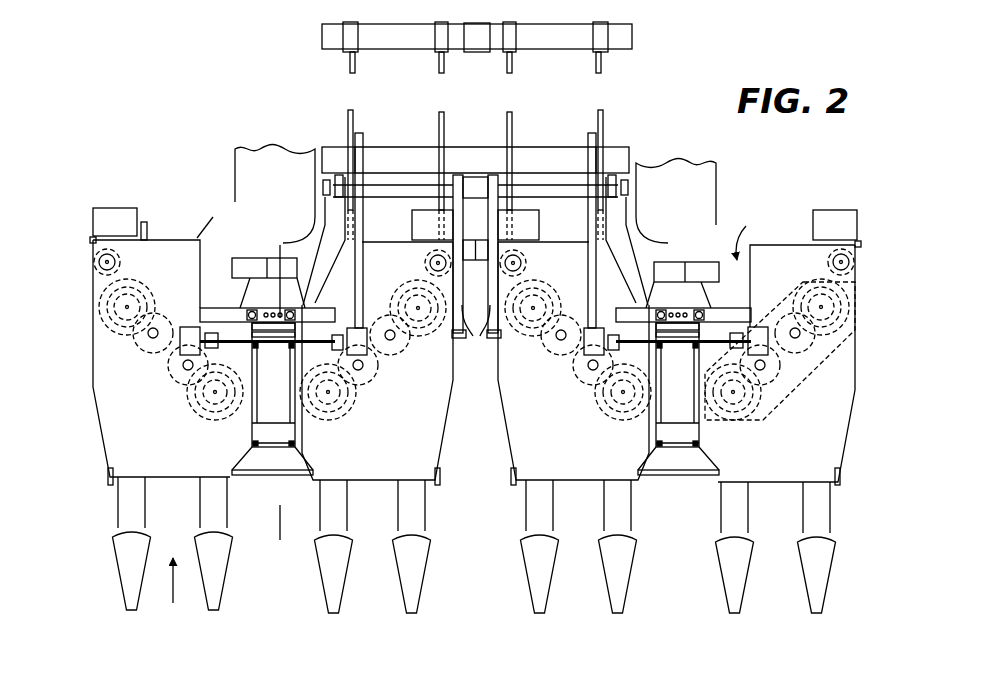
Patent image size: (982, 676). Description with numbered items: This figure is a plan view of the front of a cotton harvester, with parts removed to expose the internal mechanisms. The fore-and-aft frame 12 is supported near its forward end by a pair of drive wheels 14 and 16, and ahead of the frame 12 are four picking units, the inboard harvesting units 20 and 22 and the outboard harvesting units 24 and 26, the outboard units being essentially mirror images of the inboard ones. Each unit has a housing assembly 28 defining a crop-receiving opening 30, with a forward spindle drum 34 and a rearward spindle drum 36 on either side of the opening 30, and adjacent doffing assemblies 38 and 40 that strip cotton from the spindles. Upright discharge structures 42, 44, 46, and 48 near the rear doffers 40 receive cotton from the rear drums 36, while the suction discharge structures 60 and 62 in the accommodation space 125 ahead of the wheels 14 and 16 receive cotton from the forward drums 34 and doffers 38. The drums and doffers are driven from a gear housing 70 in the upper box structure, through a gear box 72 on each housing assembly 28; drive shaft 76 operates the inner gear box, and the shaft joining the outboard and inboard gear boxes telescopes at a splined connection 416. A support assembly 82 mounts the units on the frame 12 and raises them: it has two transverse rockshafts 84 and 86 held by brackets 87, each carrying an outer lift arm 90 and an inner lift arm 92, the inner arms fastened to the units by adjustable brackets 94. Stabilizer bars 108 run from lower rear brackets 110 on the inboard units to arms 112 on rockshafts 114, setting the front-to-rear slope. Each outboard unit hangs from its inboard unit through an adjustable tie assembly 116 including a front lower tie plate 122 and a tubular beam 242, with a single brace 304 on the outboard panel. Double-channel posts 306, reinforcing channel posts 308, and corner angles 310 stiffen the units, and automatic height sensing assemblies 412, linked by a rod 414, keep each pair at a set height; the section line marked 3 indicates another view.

The section line 3- 3 is at (271, 247).
The frame 12 is at (625, 150).
The drive wheel 14 is at (283, 203).
The drive wheel 16 is at (693, 203).
The harvesting unit 20 is at (370, 622).
The harvesting unit 22 is at (572, 622).
The harvesting unit 24 is at (147, 630).
The harvesting unit 26 is at (768, 614).
The housing assembly 28 is at (100, 408).
The crop-receiving opening 30 is at (172, 594).
The forward packing spindle drum 34 is at (203, 408).
The rearward packing spindle drum 36 is at (474, 328).
The doffing assembly 38 is at (232, 332).
The doffing assembly 40 is at (93, 264).
The discharge structure 42 is at (127, 233).
The discharge structure 44 is at (412, 228).
The discharge structure 46 is at (539, 228).
The discharge structure 48 is at (847, 235).
The discharge structure 60 is at (271, 308).
The discharge structure 62 is at (687, 306).
The gear housing 70 is at (790, 393).
The gear box 72 is at (583, 362).
The drive shaft 76 is at (589, 272).
The support assembly 82 is at (303, 110).
The rockshaft 84 is at (402, 191).
The rockshaft 86 is at (550, 191).
The bracket 87 is at (488, 168).
The outer lift arm 90 is at (475, 242).
The inner lift arm 92 is at (476, 337).
The adjustable bracket 94 is at (462, 362).
The stabilizer bar 108 is at (439, 128).
The lower rear bracket 110 is at (358, 262).
The arm 112 is at (441, 25).
The rockshaft 114 is at (413, 44).
The adjustable tie assembly 116 is at (265, 458).
The front lower tie plate 122 is at (290, 422).
The accommodation space 125 is at (764, 236).
The tubular beam 242 is at (203, 318).
The brace 304 is at (240, 284).
The double-channel post 306 is at (89, 238).
The reinforcing channel post 308 is at (146, 232).
The corner angle 310 is at (216, 216).
The automatic height sensing assembly 412 is at (108, 480).
The rod 414 is at (272, 476).
The splined connection 416 is at (207, 360).